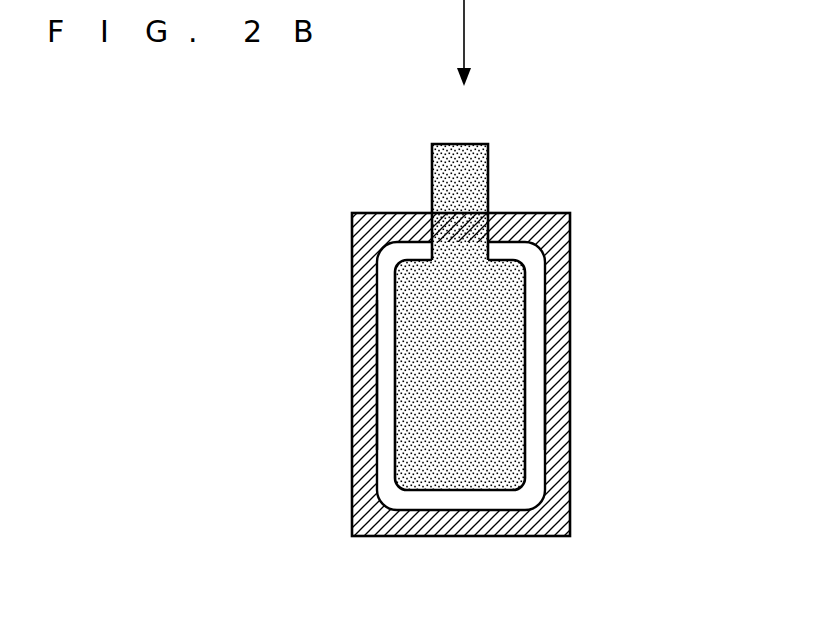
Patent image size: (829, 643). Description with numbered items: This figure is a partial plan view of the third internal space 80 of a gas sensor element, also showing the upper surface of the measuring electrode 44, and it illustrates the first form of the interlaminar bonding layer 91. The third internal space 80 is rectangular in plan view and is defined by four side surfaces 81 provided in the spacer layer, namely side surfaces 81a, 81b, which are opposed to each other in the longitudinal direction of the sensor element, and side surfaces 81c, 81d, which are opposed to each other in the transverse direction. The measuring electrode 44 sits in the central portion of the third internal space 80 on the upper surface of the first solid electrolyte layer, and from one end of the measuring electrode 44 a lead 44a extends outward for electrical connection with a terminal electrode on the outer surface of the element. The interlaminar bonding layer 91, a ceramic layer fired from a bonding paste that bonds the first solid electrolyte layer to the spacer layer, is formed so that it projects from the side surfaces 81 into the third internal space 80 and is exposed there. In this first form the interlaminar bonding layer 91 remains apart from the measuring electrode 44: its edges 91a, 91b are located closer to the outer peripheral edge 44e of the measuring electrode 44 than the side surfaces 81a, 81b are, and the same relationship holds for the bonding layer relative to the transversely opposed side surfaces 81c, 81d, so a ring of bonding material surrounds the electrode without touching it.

The third internal space 80 is at (570, 288).
The side surfaces 81 is at (476, 356).
The side surface 81a is at (356, 245).
The side surface 81b is at (564, 245).
The side surface 81c is at (437, 531).
The side surface 81d is at (425, 238).
The interlaminar bonding layer 91 is at (564, 397).
The edge of interlaminar bonding layer 91a is at (381, 428).
The edge of interlaminar bonding layer 91b is at (542, 428).
The measuring electrode 44 is at (420, 372).
The lead 44a is at (489, 178).
The outer peripheral edge 44e is at (539, 363).